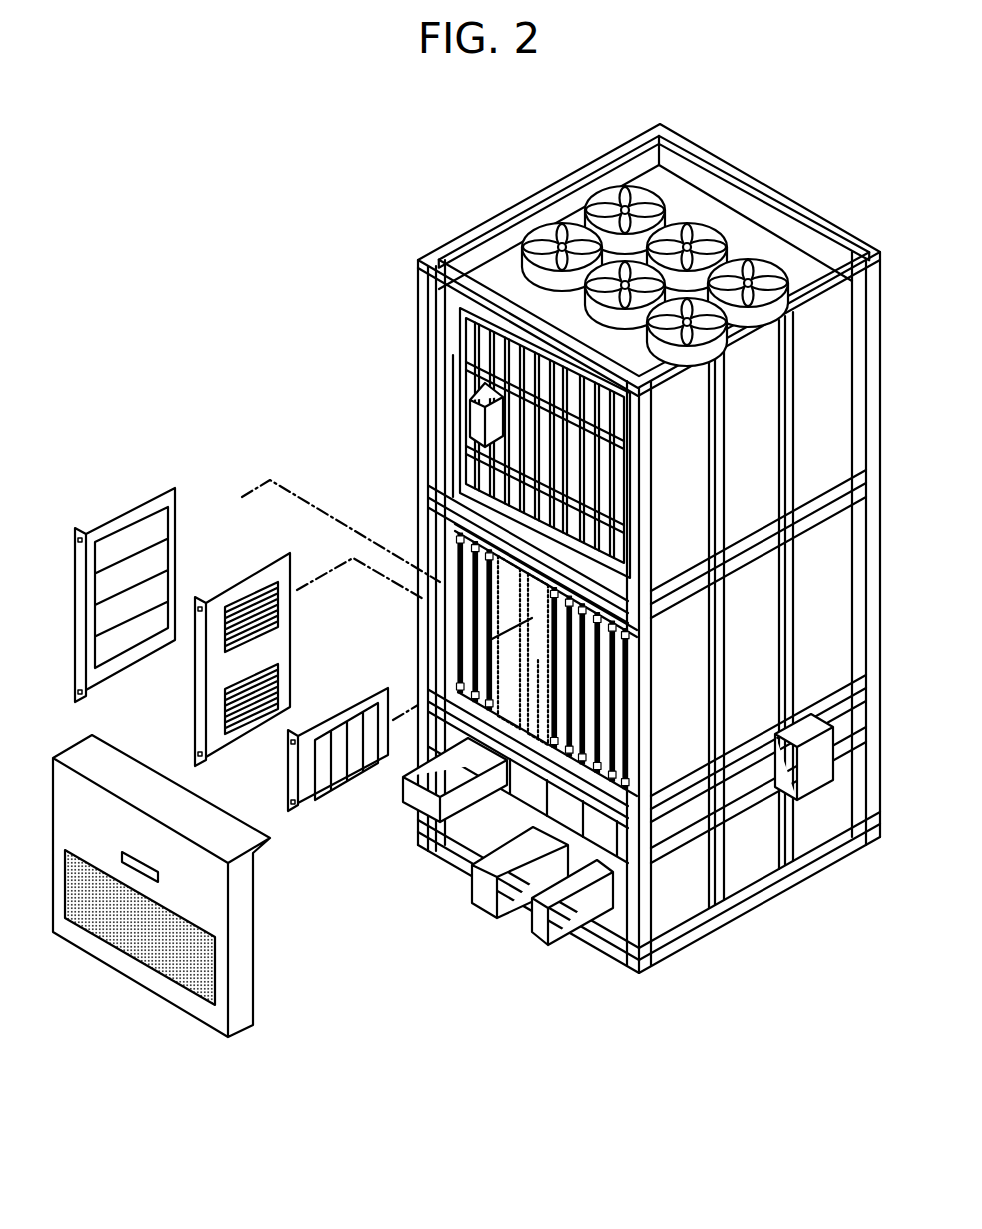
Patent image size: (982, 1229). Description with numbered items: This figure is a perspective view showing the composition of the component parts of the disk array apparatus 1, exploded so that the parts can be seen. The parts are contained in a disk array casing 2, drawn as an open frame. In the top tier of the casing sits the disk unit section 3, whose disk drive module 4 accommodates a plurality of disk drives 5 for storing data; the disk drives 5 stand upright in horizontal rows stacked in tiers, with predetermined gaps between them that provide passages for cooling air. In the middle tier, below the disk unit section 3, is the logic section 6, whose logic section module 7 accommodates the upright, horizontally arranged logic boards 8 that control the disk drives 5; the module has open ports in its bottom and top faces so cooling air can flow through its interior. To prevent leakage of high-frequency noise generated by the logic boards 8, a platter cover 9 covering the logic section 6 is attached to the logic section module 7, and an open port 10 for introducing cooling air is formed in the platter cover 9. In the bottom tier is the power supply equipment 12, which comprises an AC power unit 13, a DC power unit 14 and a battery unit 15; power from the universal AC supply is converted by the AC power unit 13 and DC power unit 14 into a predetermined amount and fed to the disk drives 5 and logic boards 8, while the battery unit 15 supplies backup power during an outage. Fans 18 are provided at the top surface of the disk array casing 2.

The disk array apparatus 1 is at (420, 216).
The disk array casing 2 is at (595, 158).
The disk unit section 3 is at (460, 379).
The disk drive module 4 is at (452, 442).
The disk drive 5 is at (470, 420).
The logic section 6 is at (466, 650).
The logic section module 7 is at (503, 607).
The logic board 8 is at (136, 508).
The platter cover 9 is at (190, 1015).
The open port 10 is at (150, 943).
The power supply equipment 12 is at (427, 878).
The AC power unit 13 is at (483, 898).
The DC power unit 14 is at (422, 808).
The battery unit 15 is at (537, 932).
The fan 18 is at (542, 235).